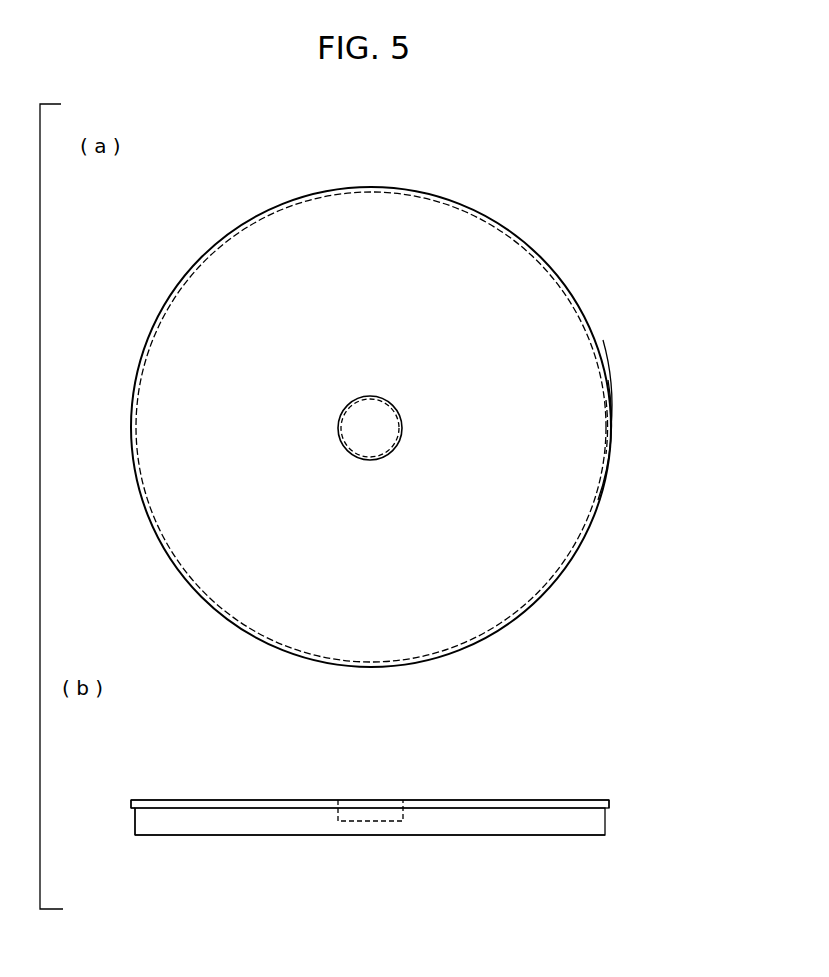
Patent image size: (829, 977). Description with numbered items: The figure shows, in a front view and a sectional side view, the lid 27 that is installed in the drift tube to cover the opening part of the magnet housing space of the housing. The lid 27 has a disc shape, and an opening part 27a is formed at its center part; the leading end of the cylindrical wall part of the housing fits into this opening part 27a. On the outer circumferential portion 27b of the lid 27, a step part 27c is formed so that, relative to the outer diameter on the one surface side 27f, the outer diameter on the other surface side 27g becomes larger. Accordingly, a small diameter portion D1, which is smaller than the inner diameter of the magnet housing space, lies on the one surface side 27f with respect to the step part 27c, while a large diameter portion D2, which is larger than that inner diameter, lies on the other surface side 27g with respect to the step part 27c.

The lid 27 is at (545, 257).
The opening part 27a is at (372, 448).
The outer circumferential portion 27b is at (600, 507).
The step part 27c is at (135, 809).
The one surface side 27f is at (530, 835).
The other surface side 27g is at (490, 592).
The small diameter portion D1 is at (609, 420).
The large diameter portion D2 is at (607, 374).